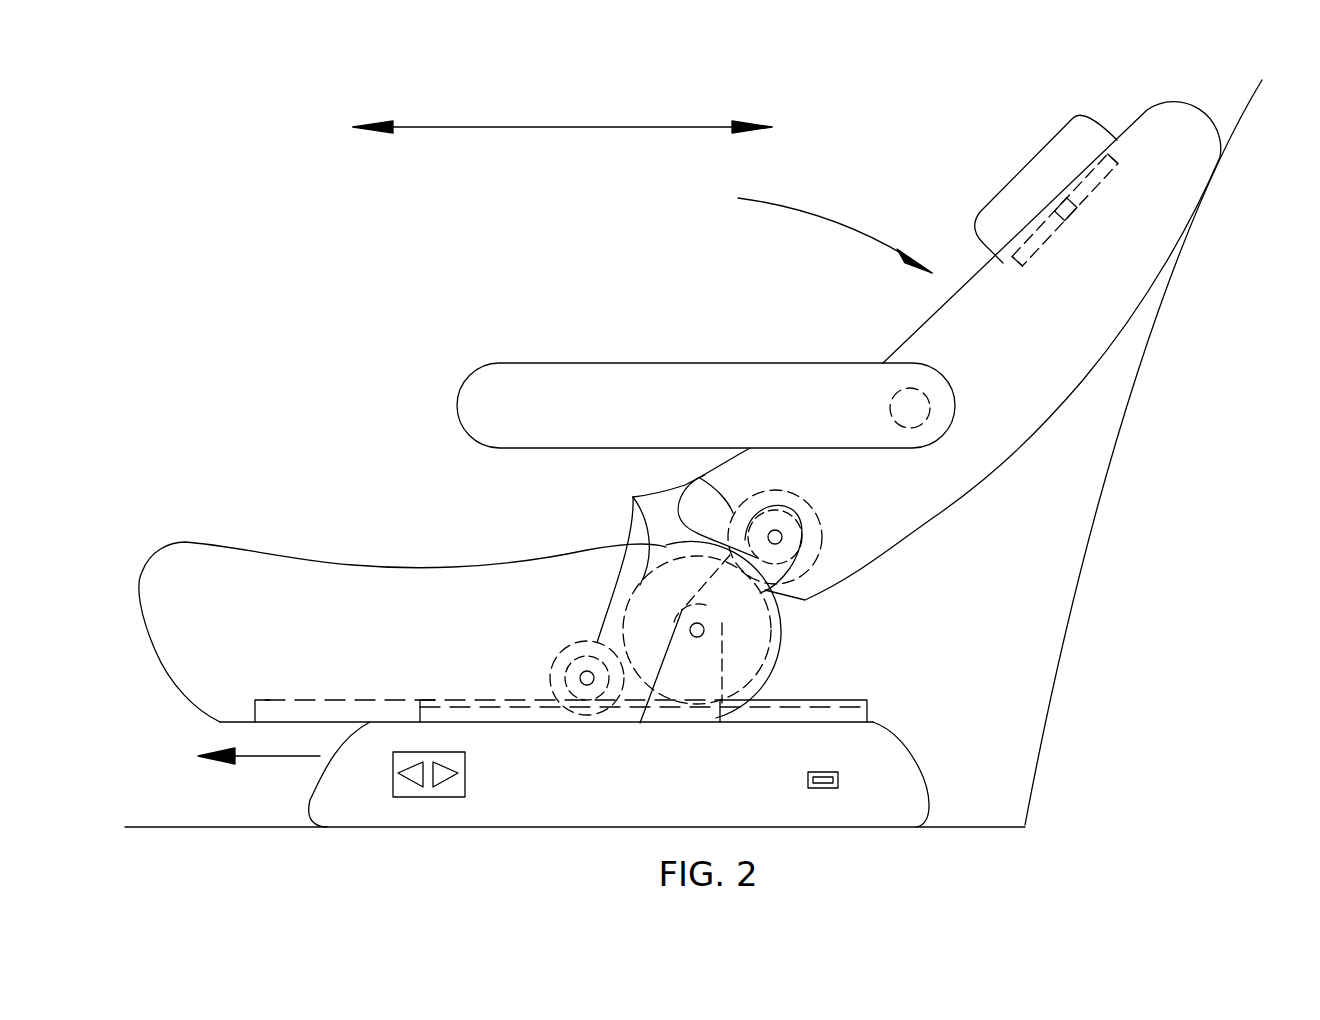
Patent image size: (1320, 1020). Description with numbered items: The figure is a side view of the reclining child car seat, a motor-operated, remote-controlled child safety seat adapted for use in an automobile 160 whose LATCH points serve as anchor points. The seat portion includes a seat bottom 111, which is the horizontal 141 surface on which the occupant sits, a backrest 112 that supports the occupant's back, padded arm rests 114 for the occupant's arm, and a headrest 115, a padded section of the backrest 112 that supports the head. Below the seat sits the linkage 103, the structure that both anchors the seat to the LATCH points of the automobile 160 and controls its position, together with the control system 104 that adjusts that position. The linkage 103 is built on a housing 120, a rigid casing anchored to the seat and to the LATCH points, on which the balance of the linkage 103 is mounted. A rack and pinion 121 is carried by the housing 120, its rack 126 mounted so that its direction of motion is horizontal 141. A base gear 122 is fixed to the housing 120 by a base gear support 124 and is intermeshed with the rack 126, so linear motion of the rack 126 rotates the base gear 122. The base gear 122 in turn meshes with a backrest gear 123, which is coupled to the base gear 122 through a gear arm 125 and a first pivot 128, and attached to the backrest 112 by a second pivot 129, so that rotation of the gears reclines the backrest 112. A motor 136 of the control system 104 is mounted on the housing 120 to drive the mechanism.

The linkage 103 is at (621, 552).
The control system 104 is at (425, 797).
The seat bottom 111 is at (347, 562).
The backrest 112 is at (1073, 393).
The arm rests 114 is at (773, 387).
The headrest 115 is at (1087, 140).
The housing 120 is at (572, 797).
The rack and pinion 121 is at (575, 682).
The base gear 122 is at (750, 627).
The backrest gear 123 is at (813, 538).
The base gear support 124 is at (686, 700).
The gear arm 125 is at (805, 600).
The rack 126 is at (868, 710).
The first pivot 128 is at (705, 636).
The second pivot 129 is at (782, 533).
The motor 136 is at (567, 650).
The horizontal 141 is at (562, 109).
The automobile 160 is at (1057, 673).